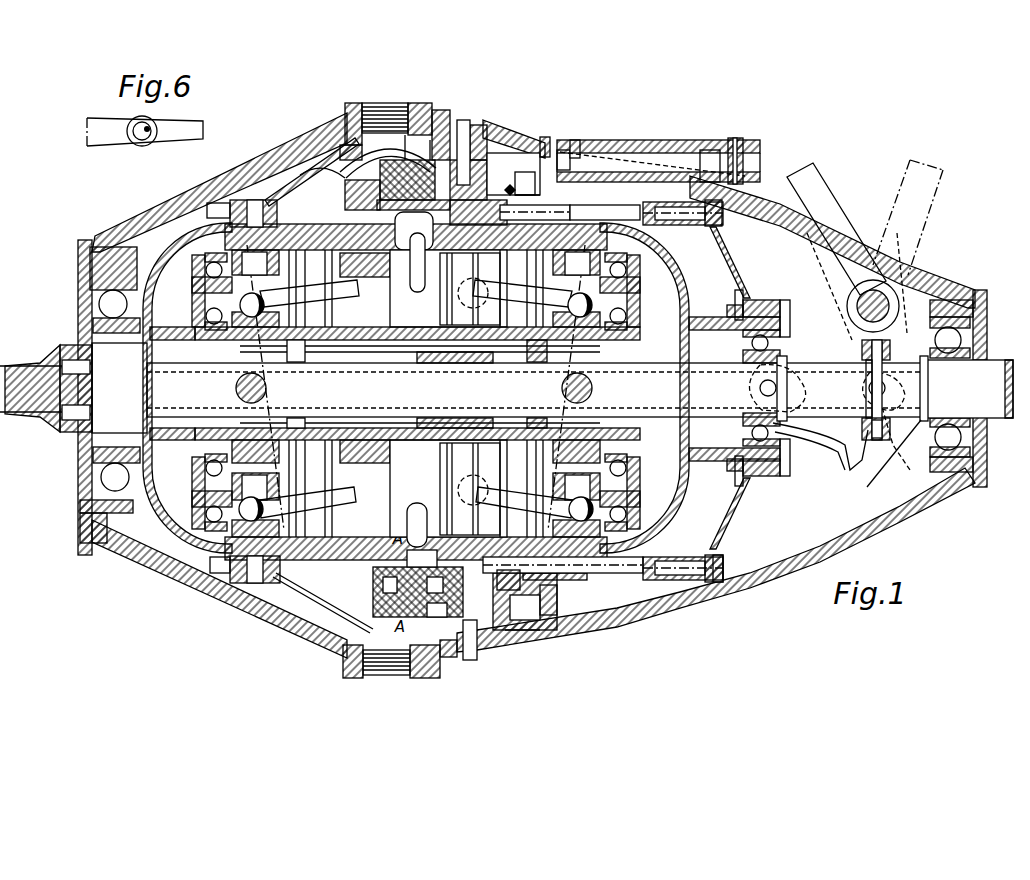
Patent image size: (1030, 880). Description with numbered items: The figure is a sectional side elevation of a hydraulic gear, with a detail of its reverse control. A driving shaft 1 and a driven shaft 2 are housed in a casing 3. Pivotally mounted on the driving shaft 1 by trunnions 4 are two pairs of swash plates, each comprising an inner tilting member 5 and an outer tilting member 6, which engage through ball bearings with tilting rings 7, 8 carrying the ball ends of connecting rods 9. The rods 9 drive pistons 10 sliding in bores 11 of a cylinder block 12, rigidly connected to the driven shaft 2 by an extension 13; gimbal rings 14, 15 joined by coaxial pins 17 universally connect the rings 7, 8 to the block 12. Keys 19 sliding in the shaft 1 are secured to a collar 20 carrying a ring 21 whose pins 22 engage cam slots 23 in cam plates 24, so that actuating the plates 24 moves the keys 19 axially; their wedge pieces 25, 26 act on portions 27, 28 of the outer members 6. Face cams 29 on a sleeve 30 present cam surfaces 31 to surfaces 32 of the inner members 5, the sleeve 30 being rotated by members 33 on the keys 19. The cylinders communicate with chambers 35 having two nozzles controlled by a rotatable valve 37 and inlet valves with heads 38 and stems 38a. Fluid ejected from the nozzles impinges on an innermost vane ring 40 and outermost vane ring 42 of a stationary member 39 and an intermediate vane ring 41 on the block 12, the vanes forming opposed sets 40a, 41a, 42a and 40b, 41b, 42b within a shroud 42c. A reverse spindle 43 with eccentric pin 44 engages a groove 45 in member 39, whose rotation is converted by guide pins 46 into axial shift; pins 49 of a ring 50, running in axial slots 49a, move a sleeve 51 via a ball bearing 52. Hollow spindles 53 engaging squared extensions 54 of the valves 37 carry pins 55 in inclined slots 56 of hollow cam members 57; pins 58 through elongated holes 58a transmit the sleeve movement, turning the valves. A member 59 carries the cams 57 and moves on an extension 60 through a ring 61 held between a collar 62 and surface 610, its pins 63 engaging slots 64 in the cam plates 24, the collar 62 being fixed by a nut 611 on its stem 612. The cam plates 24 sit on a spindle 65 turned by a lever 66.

In FIG. 1, the driving shaft 1 is at (580, 389).
In FIG. 1, the driven shaft 2 is at (18, 364).
In FIG. 1, the casing 3 is at (290, 152).
In FIG. 1, the trunnions 4 is at (245, 386).
In FIG. 1, the inner tilting member 5 is at (204, 314).
In FIG. 1, the outer tilting member 6 is at (200, 275).
In FIG. 1, the tilting ring 7 is at (535, 316).
In FIG. 1, the tilting ring 8 is at (280, 240).
In FIG. 1, the connecting rods 9 is at (416, 400).
In FIG. 1, the pistons 10 is at (395, 310).
In FIG. 1, the bores 11 is at (448, 290).
In FIG. 1, the cylinder block 12 is at (318, 232).
In FIG. 1, the extension 13 is at (160, 262).
In FIG. 1, the gimbal ring 14 is at (215, 226).
In FIG. 1, the gimbal ring 15 is at (200, 247).
In FIG. 1, the coaxial pins 17 is at (256, 206).
In FIG. 1, the keys 19 is at (390, 353).
In FIG. 1, the collar 20 is at (880, 441).
In FIG. 1, the ring 21 is at (868, 445).
In FIG. 1, the pins 22 is at (885, 430).
In FIG. 1, the cam slots 23 is at (905, 430).
In FIG. 1, the cam plates 24 is at (770, 340).
In FIG. 1, the wedge piece 25 is at (200, 345).
In FIG. 1, the wedge piece 26 is at (150, 400).
In FIG. 1, the portion 27 is at (92, 364).
In FIG. 1, the portion 28 is at (190, 440).
In FIG. 1, the face cams 29 is at (330, 342).
In FIG. 1, the sleeve 30 is at (370, 353).
In FIG. 1, the cam surfaces 31 is at (530, 345).
In FIG. 1, the surfaces 32 is at (540, 343).
In FIG. 1, the members 33 is at (445, 362).
In FIG. 1, the chambers 35 is at (412, 258).
In FIG. 1, the rotatable valve 37 is at (372, 205).
In FIG. 1, the inlet valve heads 38 is at (380, 592).
In FIG. 1, the inlet valve stems 38a is at (397, 606).
In FIG. 1, the stationary member 39 is at (443, 125).
In FIG. 1, the innermost vane ring 40 is at (470, 138).
In FIG. 1, the vanes 40a is at (500, 165).
In FIG. 1, the vanes 40b is at (380, 203).
In FIG. 1, the intermediate vane ring 41 is at (380, 170).
In FIG. 1, the vanes 41a is at (445, 178).
In FIG. 1, the vanes 41b is at (352, 150).
In FIG. 1, the outermost vane ring 42 is at (428, 108).
In FIG. 1, the vanes 42a is at (430, 140).
In FIG. 1, the vanes 42b is at (405, 135).
In FIG. 1, the shroud 42c is at (330, 172).
In FIG. 1, the reverse gear operating spindle 43 is at (650, 148).
In FIG. 6, the reverse gear operating spindle 43 is at (135, 140).
In FIG. 1, the eccentric pin 44 is at (576, 142).
In FIG. 6, the eccentric pin 44 is at (152, 136).
In FIG. 1, the groove 45 is at (562, 150).
In FIG. 1, the guide pins 46 is at (466, 130).
In FIG. 1, the pins 49 is at (510, 185).
In FIG. 1, the axial slots 49a is at (525, 195).
In FIG. 1, the ring 50 is at (525, 178).
In FIG. 1, the sleeve 51 is at (590, 210).
In FIG. 1, the ball bearing 52 is at (545, 205).
In FIG. 1, the hollow spindles 53 is at (648, 205).
In FIG. 1, the squared extensions 54 is at (455, 248).
In FIG. 1, the pins 55 is at (705, 158).
In FIG. 1, the inclined slots 56 is at (735, 138).
In FIG. 1, the hollow cam members 57 is at (722, 214).
In FIG. 1, the pins 58 is at (485, 240).
In FIG. 1, the elongated holes 58a is at (502, 578).
In FIG. 1, the member 59 is at (746, 292).
In FIG. 1, the extension 60 is at (722, 262).
In FIG. 1, the ring 61 is at (781, 310).
In FIG. 1, the collar 62 is at (782, 330).
In FIG. 1, the pins 63 is at (829, 417).
In FIG. 1, the slots 64 is at (828, 448).
In FIG. 1, the spindle 65 is at (873, 298).
In FIG. 1, the lever 66 is at (840, 222).
In FIG. 1, the surface 610 is at (778, 300).
In FIG. 1, the nut 611 is at (738, 308).
In FIG. 1, the stem 612 is at (782, 336).